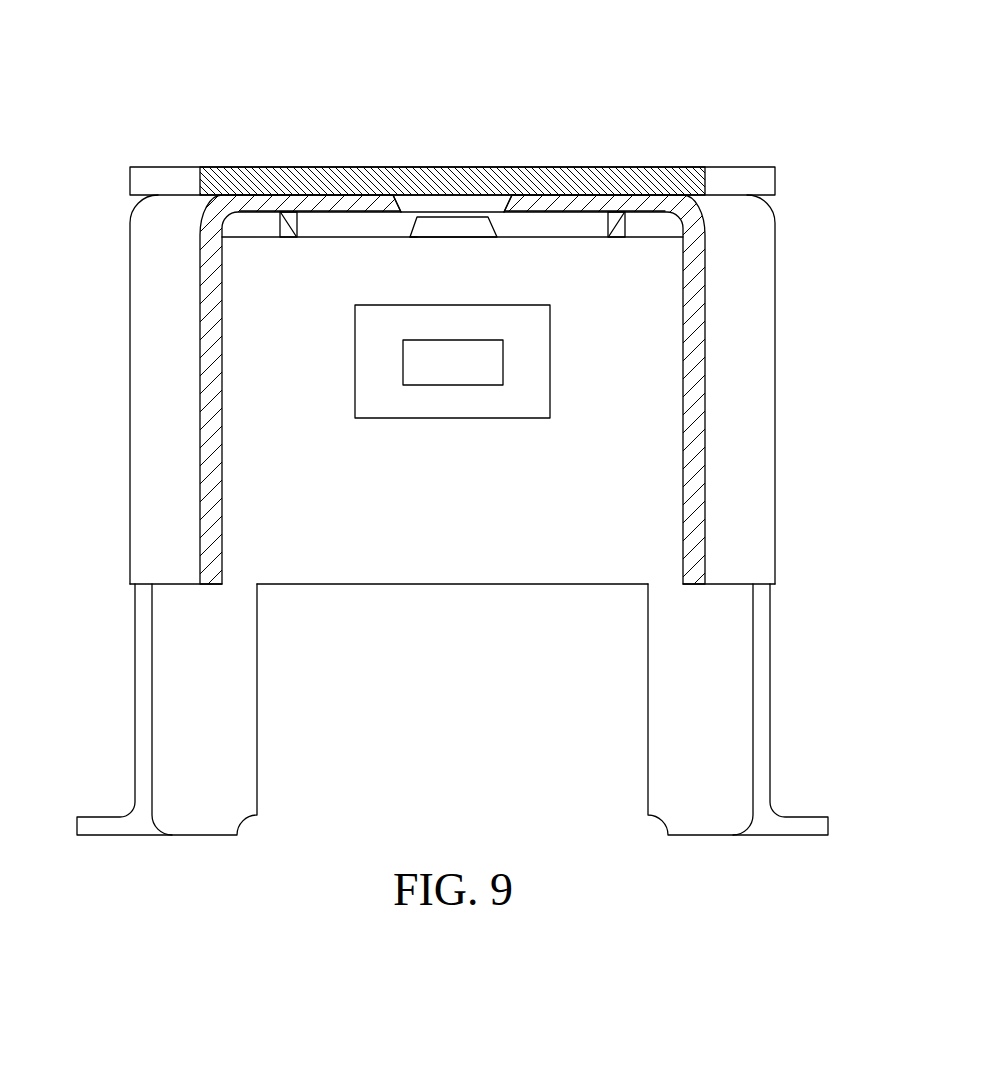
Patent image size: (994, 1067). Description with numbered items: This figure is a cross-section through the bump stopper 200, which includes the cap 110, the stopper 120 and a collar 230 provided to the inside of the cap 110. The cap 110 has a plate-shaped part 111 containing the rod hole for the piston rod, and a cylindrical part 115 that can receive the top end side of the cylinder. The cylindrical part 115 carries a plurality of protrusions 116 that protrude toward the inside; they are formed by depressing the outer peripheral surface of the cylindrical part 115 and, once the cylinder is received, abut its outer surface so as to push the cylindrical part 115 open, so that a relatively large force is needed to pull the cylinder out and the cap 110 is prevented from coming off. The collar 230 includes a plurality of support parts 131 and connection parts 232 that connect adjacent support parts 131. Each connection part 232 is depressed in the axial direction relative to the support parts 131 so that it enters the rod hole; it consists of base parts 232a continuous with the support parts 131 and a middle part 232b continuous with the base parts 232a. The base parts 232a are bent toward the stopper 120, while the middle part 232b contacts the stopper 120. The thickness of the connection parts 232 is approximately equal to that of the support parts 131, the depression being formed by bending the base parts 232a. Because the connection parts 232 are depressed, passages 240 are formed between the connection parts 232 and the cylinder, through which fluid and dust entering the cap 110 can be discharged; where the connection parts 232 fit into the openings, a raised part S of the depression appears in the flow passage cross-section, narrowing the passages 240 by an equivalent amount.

The bump stopper 200 is at (116, 110).
The cap 110 is at (130, 723).
The cylindrical part 115 is at (150, 372).
The protrusions 116 is at (452, 367).
The stopper 120 is at (228, 180).
The plate-shaped part 111 is at (288, 205).
The support parts 131 is at (310, 220).
The collar 230 is at (632, 222).
The connection parts 232 is at (553, 90).
The base parts 232a is at (399, 203).
The middle part 232b is at (462, 208).
The passages 240 is at (453, 228).
The raised part S is at (416, 228).